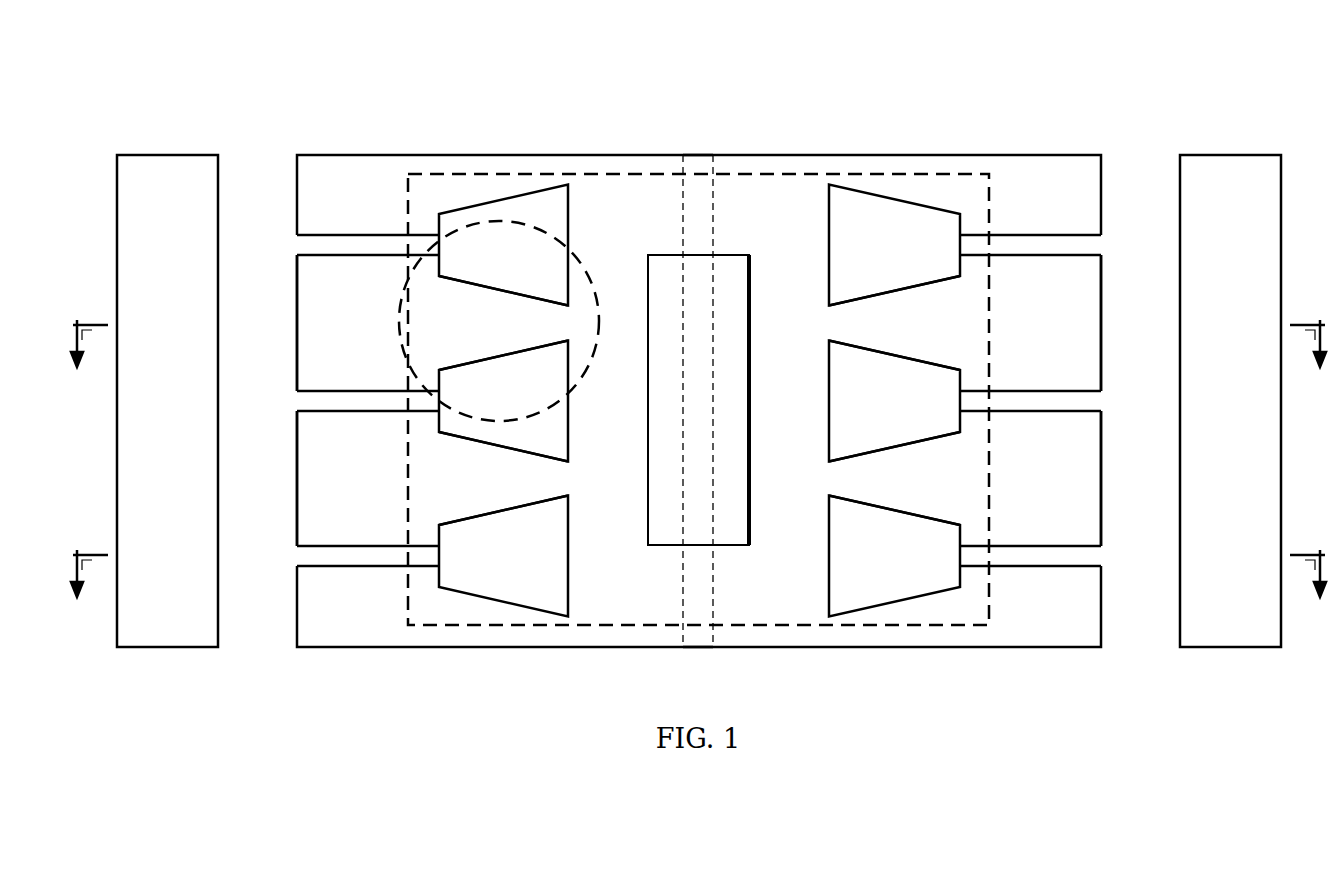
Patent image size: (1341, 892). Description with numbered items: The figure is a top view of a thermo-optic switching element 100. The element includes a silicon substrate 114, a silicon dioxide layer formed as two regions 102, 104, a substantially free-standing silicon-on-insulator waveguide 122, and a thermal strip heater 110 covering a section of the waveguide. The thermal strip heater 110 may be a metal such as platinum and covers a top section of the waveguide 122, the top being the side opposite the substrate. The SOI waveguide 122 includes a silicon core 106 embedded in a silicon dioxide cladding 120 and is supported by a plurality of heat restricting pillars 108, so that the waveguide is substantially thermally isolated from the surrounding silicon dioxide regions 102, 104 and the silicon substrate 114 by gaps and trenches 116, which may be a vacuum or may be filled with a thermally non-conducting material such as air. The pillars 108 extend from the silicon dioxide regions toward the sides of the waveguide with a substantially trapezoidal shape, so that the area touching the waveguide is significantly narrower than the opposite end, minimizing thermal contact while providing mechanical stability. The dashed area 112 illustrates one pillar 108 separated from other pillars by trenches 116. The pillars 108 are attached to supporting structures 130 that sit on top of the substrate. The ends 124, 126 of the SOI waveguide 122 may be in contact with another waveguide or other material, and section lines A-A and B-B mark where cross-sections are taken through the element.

The thermo-optic switching element 100 is at (466, 63).
The silicon dioxide layer 102 is at (148, 415).
The silicon dioxide layer 104 is at (1211, 415).
The silicon core 106 is at (682, 243).
The heat restricting pillars 108 is at (478, 337).
The thermal strip heater 110 is at (667, 539).
The area 112 is at (579, 389).
The silicon substrate 114 is at (405, 588).
The gaps and trenches 116 is at (478, 260).
The silicon dioxide cladding 120 is at (769, 337).
The SOI waveguide 122 is at (506, 162).
The end of SOI waveguide 124 is at (698, 649).
The end of SOI waveguide 126 is at (698, 162).
The supporting structures 130 is at (331, 337).